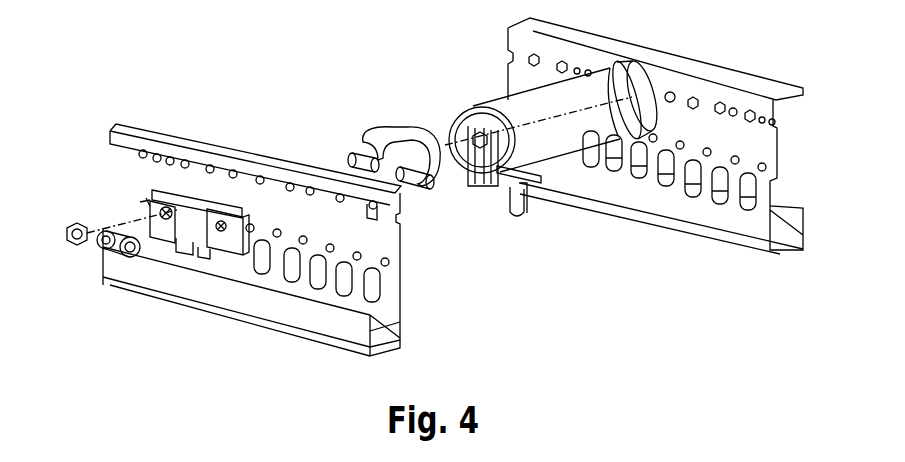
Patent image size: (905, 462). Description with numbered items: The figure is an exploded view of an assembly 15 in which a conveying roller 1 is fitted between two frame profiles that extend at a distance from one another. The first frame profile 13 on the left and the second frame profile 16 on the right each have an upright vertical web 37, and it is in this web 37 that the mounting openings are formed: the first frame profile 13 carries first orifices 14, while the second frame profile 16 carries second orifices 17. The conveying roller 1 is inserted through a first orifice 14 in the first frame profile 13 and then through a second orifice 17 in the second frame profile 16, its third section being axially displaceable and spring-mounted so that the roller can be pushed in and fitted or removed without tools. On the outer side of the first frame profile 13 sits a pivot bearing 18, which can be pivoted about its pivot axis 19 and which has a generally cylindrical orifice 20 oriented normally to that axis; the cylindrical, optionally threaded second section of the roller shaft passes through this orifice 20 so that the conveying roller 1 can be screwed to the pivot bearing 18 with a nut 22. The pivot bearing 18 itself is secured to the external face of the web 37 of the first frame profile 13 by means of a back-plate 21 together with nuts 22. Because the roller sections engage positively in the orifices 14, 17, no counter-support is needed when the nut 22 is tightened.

The conveying roller 1 is at (507, 108).
The first frame profile 13 is at (283, 318).
The first orifices 14 is at (210, 173).
The assembly 15 is at (367, 63).
The second frame profile 16 is at (763, 83).
The second orifices 17 is at (693, 100).
The pivot bearing 18 is at (147, 205).
The pivot axis 19 is at (200, 187).
The cylindrical orifice 20 is at (197, 213).
The back-plate 21 is at (378, 137).
The nut 22 is at (102, 247).
The vertical web 37 is at (380, 237).